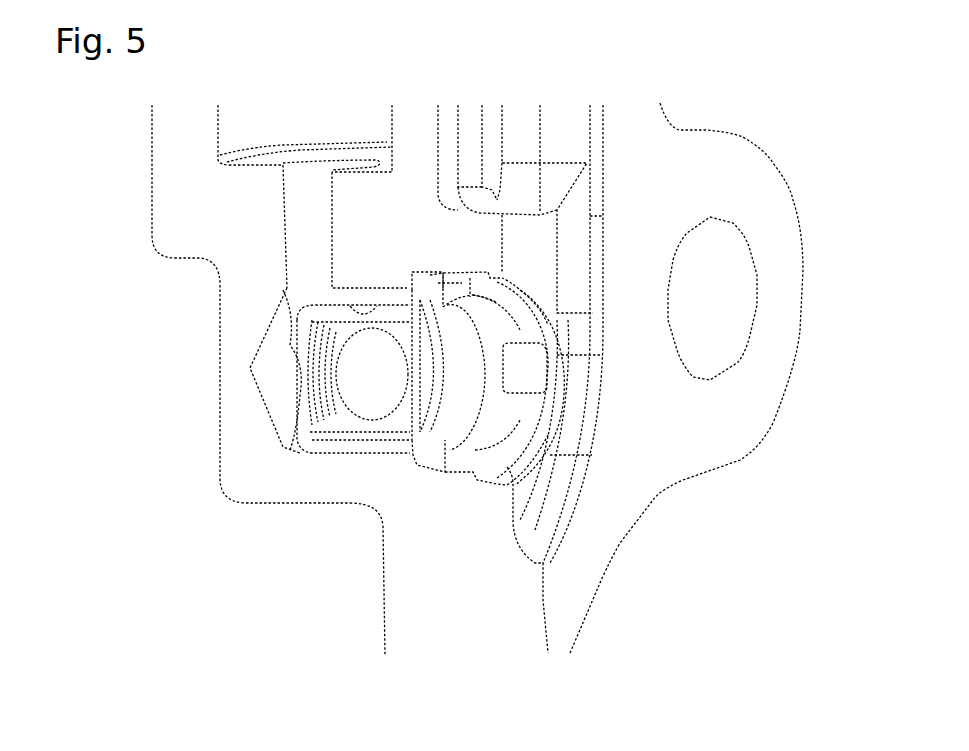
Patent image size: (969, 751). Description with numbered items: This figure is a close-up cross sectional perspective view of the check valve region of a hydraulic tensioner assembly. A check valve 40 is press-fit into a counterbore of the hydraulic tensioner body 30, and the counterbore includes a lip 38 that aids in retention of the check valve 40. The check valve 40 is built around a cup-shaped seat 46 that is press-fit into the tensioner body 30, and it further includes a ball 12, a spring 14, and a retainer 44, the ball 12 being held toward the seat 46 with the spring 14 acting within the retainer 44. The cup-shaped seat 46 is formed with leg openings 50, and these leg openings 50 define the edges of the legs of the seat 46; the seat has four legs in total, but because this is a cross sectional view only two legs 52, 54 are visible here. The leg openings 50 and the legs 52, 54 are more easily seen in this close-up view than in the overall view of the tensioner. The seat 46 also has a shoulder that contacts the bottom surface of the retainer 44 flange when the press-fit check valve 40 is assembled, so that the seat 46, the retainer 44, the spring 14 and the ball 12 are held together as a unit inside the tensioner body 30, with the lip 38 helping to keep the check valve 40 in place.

The ball 12 is at (370, 384).
The spring 14 is at (300, 418).
The hydraulic tensioner body 30 is at (190, 180).
The lip 38 is at (498, 282).
The check valve 40 is at (270, 382).
The retainer 44 is at (297, 324).
The cup-shaped seat 46 is at (415, 425).
The leg openings 50 is at (462, 283).
The leg 52 is at (508, 434).
The leg 54 is at (505, 322).